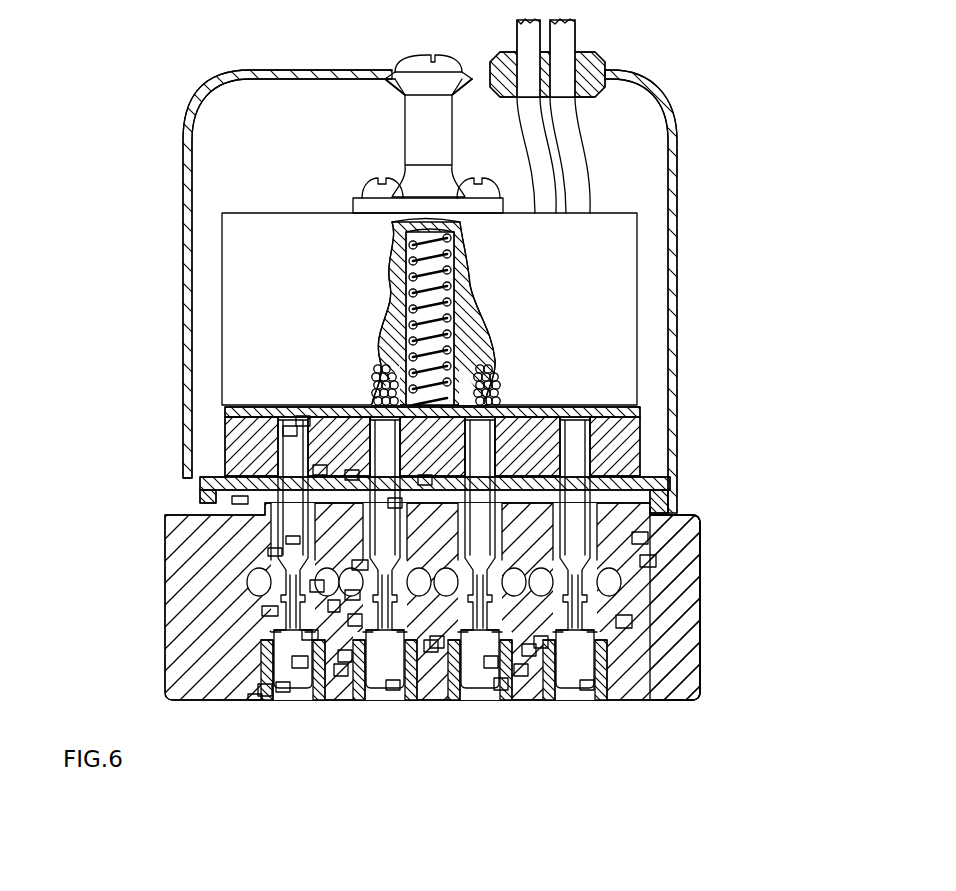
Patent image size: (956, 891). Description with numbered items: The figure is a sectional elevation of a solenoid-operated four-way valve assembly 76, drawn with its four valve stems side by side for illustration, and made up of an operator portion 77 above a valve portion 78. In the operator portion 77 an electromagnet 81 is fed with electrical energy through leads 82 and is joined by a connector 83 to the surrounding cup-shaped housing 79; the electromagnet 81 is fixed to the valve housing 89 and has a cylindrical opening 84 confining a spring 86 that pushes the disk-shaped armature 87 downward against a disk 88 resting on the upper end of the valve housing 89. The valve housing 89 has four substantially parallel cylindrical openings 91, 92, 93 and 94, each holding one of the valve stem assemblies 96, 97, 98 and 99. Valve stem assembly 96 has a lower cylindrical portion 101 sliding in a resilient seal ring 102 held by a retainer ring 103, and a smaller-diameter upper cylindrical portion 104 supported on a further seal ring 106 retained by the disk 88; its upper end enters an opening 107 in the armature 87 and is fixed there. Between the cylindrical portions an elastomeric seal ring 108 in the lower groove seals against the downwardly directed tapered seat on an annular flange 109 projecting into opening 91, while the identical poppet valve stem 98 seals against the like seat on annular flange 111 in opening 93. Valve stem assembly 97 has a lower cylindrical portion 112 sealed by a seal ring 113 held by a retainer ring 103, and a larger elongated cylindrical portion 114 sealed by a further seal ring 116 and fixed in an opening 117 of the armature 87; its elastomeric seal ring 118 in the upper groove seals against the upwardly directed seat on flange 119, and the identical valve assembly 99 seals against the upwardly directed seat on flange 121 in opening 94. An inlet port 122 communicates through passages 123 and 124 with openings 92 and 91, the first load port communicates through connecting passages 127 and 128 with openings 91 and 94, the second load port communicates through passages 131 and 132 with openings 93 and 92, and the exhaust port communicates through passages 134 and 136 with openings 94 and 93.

The solenoid-operated four-way valve assembly 76 is at (121, 368).
The operator portion 77 is at (704, 86).
The valve portion 78 is at (152, 637).
The cup-shaped housing 79 is at (186, 113).
The electromagnet 81 is at (320, 225).
The leads 82 is at (570, 46).
The connector 83 is at (420, 128).
The cylindrical opening 84 is at (440, 275).
The spring 86 is at (478, 298).
The disk-shaped armature 87 is at (232, 443).
The disk 88 is at (658, 478).
The valve housing 89 is at (472, 186).
The cylindrical opening 91 is at (240, 500).
The cylindrical opening 92 is at (295, 540).
The cylindrical opening 93 is at (648, 560).
The cylindrical opening 94 is at (640, 538).
The valve stem assembly 96 is at (280, 692).
The valve stem assembly 97 is at (355, 620).
The poppet valve stem 98 is at (502, 684).
The valve assembly 99 is at (587, 686).
The lower cylindrical portion 101 is at (255, 698).
The resilient seal ring 102 is at (300, 662).
The retainer ring 103 is at (345, 660).
The upper cylindrical portion 104 is at (303, 420).
The seal ring 106 is at (320, 470).
The opening 107 is at (290, 430).
The elastomeric seal ring 108 is at (310, 635).
The annular flange 109 is at (360, 565).
The annular flange 111 is at (520, 670).
The lower cylindrical portion 112 is at (395, 686).
The seal ring 113 is at (340, 670).
The elongated cylindrical portion 114 is at (352, 475).
The seal ring 116 is at (395, 503).
The opening 117 is at (425, 480).
The elastomeric seal ring 118 is at (275, 552).
The flange 119 is at (430, 645).
The flange 121 is at (625, 622).
The inlet port 122 is at (464, 11).
The passage 123 is at (317, 585).
The passage 124 is at (270, 612).
The connecting passage 127 is at (355, 595).
The connecting passage 128 is at (540, 640).
The passage 131 is at (490, 660).
The passage 132 is at (335, 602).
The passage 134 is at (530, 650).
The passage 136 is at (437, 640).